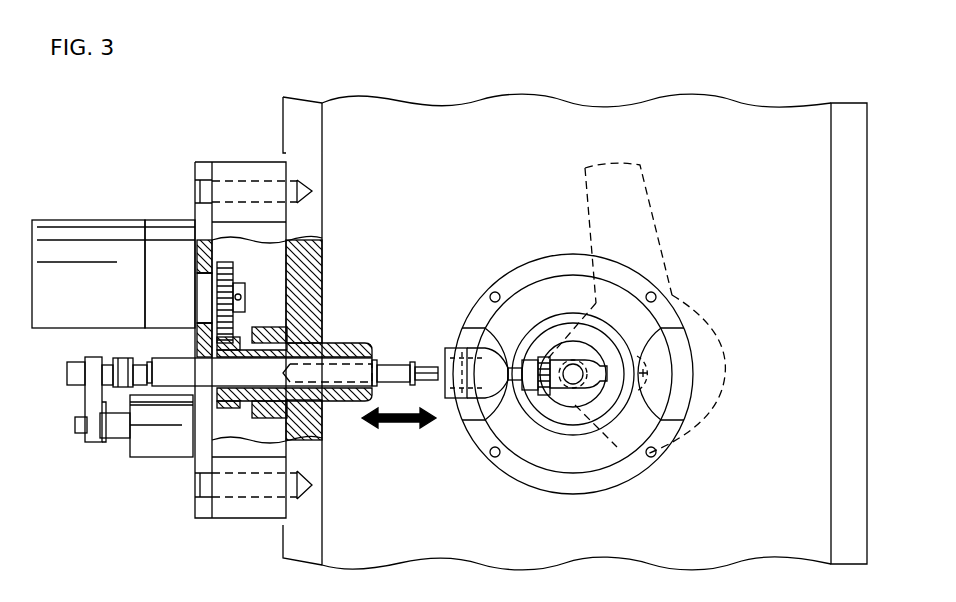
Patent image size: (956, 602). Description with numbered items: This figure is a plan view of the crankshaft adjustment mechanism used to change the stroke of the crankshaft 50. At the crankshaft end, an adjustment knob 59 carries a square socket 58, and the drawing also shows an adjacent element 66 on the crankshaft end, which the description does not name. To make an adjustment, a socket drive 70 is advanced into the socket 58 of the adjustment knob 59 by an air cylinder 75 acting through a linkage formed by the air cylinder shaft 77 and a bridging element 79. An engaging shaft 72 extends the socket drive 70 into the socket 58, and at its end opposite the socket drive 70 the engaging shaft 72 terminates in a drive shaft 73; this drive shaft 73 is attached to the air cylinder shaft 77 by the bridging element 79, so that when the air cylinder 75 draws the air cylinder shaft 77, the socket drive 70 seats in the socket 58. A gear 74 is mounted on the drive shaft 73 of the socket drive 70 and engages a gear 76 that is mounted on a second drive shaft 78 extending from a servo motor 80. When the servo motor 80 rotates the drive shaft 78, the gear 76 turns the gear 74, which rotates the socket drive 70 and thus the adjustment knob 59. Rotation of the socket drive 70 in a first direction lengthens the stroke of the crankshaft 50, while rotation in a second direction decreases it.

The crankshaft 50 is at (640, 210).
The socket 58 is at (444, 400).
The adjustment knob 59 is at (481, 378).
The hub 66 is at (545, 362).
The socket drive 70 is at (428, 366).
The engaging shaft 72 is at (395, 362).
The drive shaft 73 is at (248, 375).
The gear 74 is at (217, 398).
The air cylinder 75 is at (152, 445).
The gear 76 is at (221, 262).
The air cylinder shaft 77 is at (118, 432).
The drive shaft 78 is at (205, 295).
The bridging element 79 is at (87, 398).
The servo motor 80 is at (88, 228).